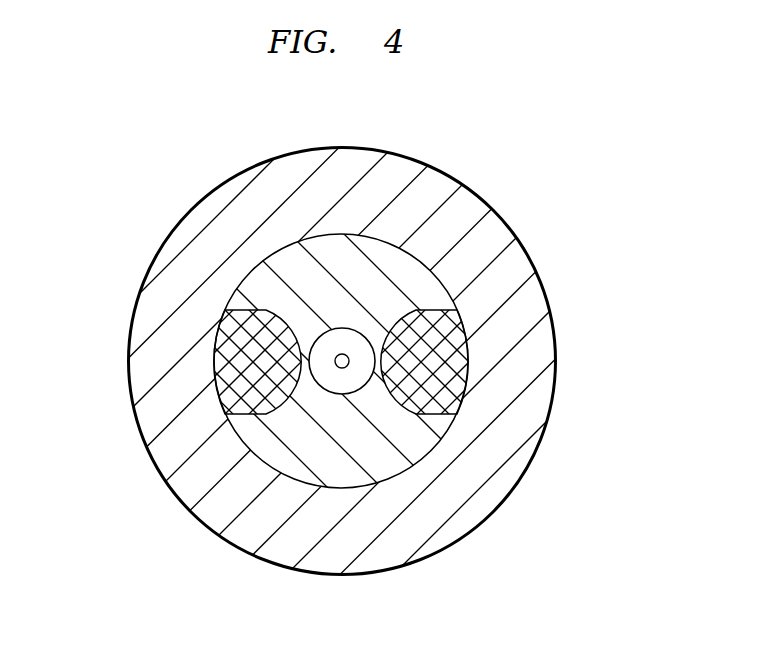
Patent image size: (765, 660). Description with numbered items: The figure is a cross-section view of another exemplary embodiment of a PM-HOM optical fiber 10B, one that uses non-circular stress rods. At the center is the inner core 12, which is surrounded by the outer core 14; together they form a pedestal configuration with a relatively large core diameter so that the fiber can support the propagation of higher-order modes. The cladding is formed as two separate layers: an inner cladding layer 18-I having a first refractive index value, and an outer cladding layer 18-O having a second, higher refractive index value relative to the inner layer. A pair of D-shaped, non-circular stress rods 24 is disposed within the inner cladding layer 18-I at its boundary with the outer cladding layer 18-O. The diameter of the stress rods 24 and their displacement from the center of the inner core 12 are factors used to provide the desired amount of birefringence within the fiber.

The PM-HOM optical fiber 10B is at (591, 190).
The inner core 12 is at (343, 360).
The outer core 14 is at (328, 342).
The outer cladding layer 18-O is at (522, 310).
The inner cladding layer 18-I is at (410, 442).
The stress rods 24 is at (243, 373).